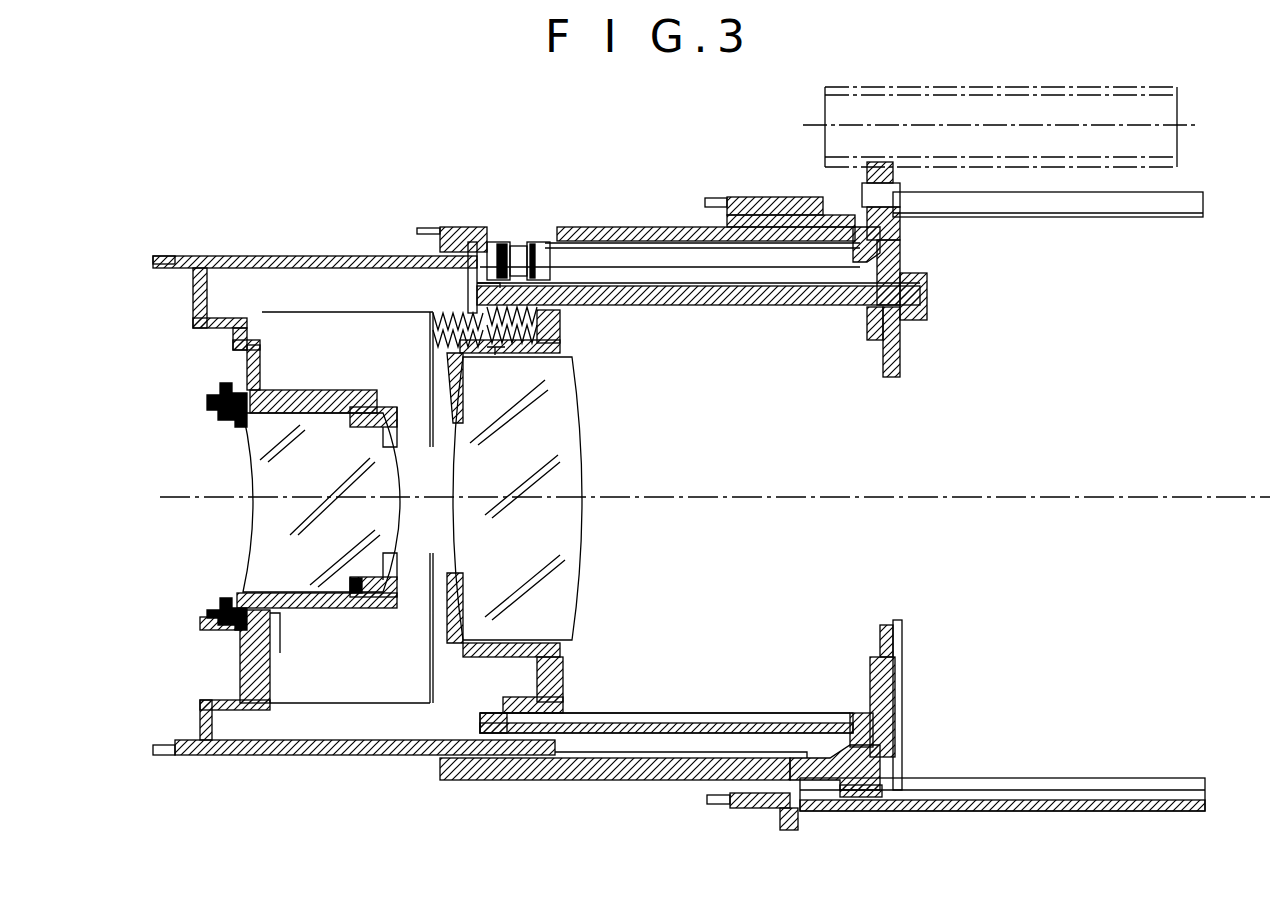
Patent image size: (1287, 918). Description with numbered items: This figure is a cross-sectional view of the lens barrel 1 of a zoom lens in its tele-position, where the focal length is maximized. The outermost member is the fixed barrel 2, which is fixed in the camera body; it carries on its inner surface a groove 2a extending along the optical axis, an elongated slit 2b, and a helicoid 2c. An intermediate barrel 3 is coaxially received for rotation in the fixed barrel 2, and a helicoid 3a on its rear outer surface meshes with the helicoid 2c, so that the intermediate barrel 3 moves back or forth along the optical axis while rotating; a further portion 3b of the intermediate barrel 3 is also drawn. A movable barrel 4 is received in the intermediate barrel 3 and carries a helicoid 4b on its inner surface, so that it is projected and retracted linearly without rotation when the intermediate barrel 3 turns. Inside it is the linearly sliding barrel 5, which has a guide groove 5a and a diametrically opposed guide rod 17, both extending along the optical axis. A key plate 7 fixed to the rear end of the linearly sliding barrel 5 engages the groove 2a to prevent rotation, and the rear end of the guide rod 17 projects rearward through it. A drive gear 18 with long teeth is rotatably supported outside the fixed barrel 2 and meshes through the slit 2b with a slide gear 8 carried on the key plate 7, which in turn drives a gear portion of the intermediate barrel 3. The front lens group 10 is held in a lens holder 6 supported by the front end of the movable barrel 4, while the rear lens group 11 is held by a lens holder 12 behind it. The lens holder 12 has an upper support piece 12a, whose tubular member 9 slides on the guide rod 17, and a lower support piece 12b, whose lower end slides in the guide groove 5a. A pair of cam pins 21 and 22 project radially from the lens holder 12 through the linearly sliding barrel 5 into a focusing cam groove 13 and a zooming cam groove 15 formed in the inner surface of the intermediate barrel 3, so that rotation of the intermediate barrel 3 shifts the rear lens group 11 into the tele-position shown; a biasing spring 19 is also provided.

The lens barrel 1 is at (651, 156).
The fixed barrel 2 is at (725, 198).
The groove 2a is at (980, 790).
The elongated slit 2b is at (1095, 208).
The helicoid 2c is at (998, 218).
The intermediate barrel 3 is at (445, 227).
The helicoid 3a is at (810, 214).
The lower flange of fixed barrel 3b is at (852, 800).
The movable barrel 4 is at (205, 255).
The helicoid 4b is at (440, 240).
The linearly sliding barrel 5 is at (635, 716).
The guide groove 5a is at (733, 718).
The lens holder 6 is at (312, 413).
The key plate 7 is at (900, 353).
The slide gear 8 is at (897, 183).
The tubular member 9 is at (512, 246).
The front lens group 10 is at (270, 540).
The rear lens group 11 is at (565, 546).
The lens holder 12 is at (540, 357).
The upper support piece 12a is at (565, 322).
The lower support piece 12b is at (503, 705).
The focusing cam groove 13 is at (492, 242).
The zooming cam groove 15 is at (545, 240).
The guide rod 17 is at (760, 306).
The drive gear 18 is at (1068, 86).
The biasing spring 19 is at (432, 326).
The cam pin 21 is at (468, 268).
The cam pin 22 is at (560, 262).